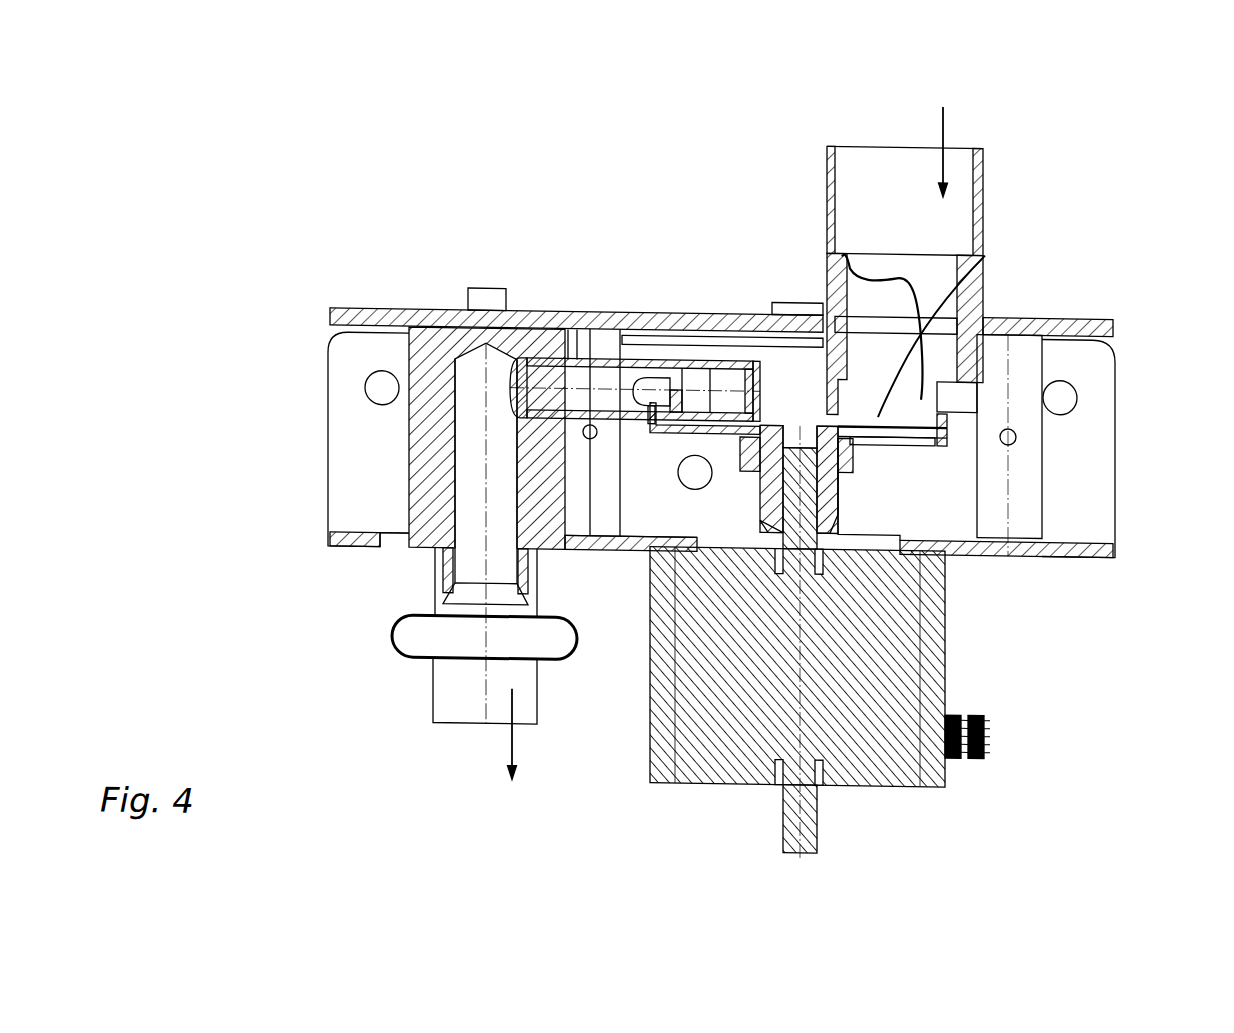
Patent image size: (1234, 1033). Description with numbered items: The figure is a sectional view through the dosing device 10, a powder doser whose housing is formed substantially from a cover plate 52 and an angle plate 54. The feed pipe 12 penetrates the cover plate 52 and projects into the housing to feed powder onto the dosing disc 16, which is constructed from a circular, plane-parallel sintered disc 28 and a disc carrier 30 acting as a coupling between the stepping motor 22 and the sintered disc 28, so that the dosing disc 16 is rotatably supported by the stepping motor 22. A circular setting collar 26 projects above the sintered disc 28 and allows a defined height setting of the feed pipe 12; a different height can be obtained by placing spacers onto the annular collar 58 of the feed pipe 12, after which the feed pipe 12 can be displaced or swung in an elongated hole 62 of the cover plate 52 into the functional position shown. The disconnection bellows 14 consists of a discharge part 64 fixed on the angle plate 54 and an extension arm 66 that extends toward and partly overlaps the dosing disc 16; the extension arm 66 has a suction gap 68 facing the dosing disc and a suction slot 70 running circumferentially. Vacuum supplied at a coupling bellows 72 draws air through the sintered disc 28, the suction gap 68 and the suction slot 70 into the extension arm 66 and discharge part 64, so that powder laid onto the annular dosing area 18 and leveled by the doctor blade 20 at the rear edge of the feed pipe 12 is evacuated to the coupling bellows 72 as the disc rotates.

The dosing device 10 is at (1158, 180).
The feed pipe 12 is at (825, 184).
The disconnection bellows 14 is at (392, 462).
The dosing disc 16 is at (733, 466).
The annular dosing area 18 is at (884, 402).
The doctor blade 20 is at (845, 410).
The stepping motor 22 is at (945, 647).
The setting collar 26 is at (773, 411).
The sintered disc 28 is at (908, 413).
The disc carrier 30 is at (945, 429).
The cover plate 52 is at (1097, 310).
The angle plate 54 is at (1097, 452).
The annular collar 58 is at (1010, 309).
The elongated hole 62 is at (798, 319).
The discharge part 64 is at (420, 340).
The extension arm 66 is at (575, 342).
The suction gap 68 is at (700, 407).
The suction slot 70 is at (648, 384).
The coupling bellows 72 is at (432, 698).